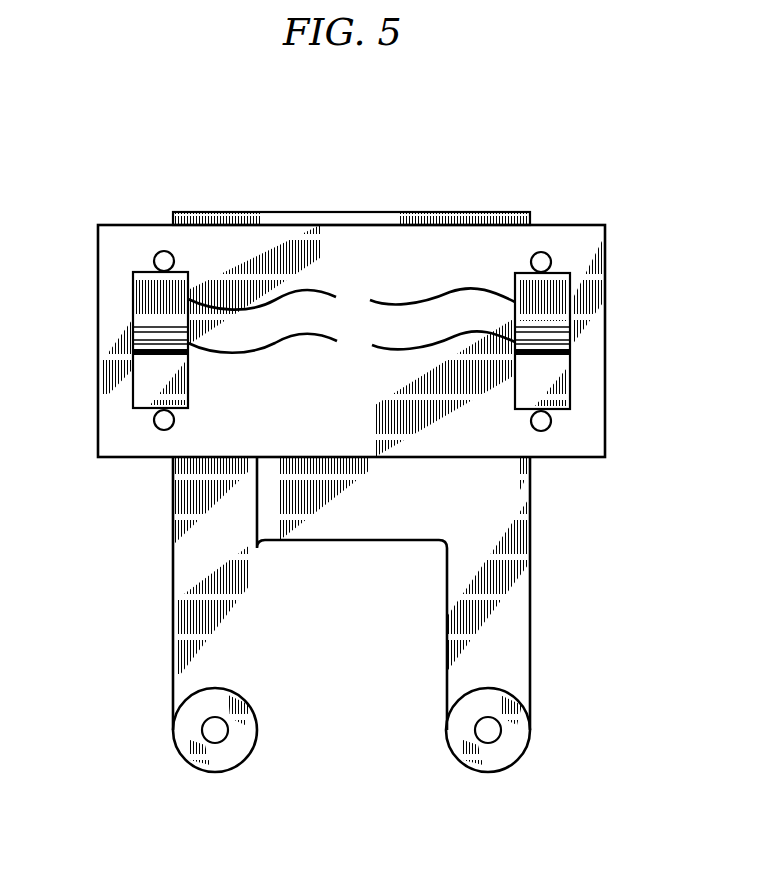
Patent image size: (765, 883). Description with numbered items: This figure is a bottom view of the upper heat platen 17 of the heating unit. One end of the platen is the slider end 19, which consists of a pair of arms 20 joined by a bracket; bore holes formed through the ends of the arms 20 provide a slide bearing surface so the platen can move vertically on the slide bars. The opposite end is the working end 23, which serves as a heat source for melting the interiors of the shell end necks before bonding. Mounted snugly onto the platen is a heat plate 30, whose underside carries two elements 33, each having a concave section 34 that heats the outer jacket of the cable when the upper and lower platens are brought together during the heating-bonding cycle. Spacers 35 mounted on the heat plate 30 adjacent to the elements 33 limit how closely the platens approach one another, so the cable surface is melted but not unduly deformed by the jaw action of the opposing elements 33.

The upper heat platen 17 is at (154, 673).
The slider end 19 is at (356, 761).
The arms 20 is at (173, 593).
The working end 23 is at (370, 211).
The heat plate 30 is at (507, 847).
The elements 33 is at (351, 297).
The concave section 34 is at (351, 344).
The spacers 35 is at (541, 251).